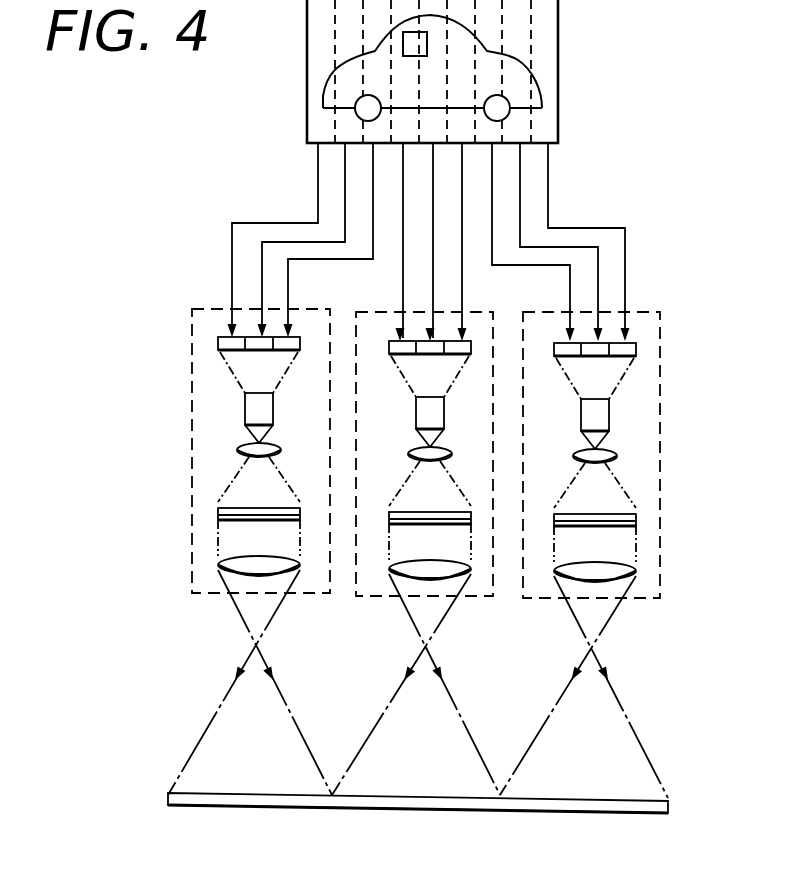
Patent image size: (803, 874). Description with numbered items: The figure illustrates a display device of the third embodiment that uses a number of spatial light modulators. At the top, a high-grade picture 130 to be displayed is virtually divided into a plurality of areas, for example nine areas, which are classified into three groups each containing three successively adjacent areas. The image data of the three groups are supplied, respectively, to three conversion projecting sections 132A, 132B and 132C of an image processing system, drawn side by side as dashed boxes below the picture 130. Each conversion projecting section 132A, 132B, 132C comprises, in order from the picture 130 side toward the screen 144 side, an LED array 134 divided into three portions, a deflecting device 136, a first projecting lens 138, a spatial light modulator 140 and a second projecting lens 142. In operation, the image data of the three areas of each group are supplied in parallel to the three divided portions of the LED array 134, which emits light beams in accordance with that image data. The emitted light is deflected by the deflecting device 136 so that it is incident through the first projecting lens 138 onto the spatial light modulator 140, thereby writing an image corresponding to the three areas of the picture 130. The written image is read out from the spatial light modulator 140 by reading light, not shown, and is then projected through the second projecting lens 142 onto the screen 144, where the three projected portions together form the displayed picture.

The high-grade picture 130 is at (552, 103).
The conversion projecting section 132A is at (200, 307).
The conversion projecting section 132B is at (390, 312).
The conversion projecting section 132C is at (558, 312).
The LED array 134 is at (218, 343).
The deflecting device 136 is at (245, 408).
The first projecting lens 138 is at (237, 449).
The spatial light modulator 140 is at (218, 512).
The second projecting lens 142 is at (218, 565).
The screen 144 is at (668, 808).